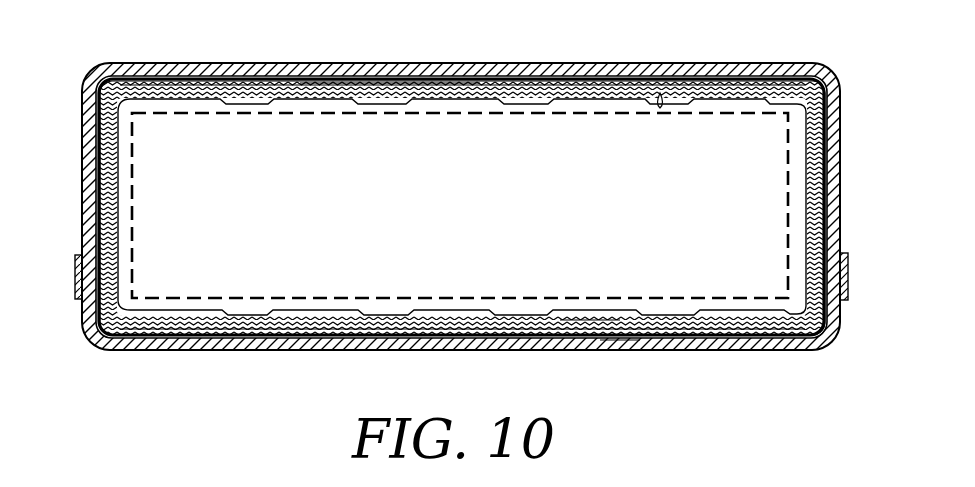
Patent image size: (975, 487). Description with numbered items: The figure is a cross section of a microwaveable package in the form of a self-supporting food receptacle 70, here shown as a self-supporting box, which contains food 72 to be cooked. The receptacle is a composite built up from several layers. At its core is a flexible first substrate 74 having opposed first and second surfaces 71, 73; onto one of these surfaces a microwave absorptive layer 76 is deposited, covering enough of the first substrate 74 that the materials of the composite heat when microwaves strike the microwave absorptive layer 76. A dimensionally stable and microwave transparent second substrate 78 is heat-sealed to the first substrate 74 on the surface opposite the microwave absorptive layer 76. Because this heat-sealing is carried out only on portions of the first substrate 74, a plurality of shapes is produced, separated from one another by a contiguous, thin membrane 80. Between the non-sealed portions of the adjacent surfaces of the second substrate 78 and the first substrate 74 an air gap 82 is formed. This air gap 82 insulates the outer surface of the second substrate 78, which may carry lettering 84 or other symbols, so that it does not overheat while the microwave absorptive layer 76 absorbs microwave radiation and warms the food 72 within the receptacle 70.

The self-supporting food receptacle 70 is at (823, 51).
The first surface 71 is at (592, 333).
The food 72 is at (755, 174).
The second surface 73 is at (612, 341).
The first substrate 74 is at (583, 87).
The microwave absorptive layer 76 is at (112, 72).
The second substrate 78 is at (232, 62).
The membrane 80 is at (383, 64).
The air gap 82 is at (177, 76).
The lettering 84 is at (78, 265).